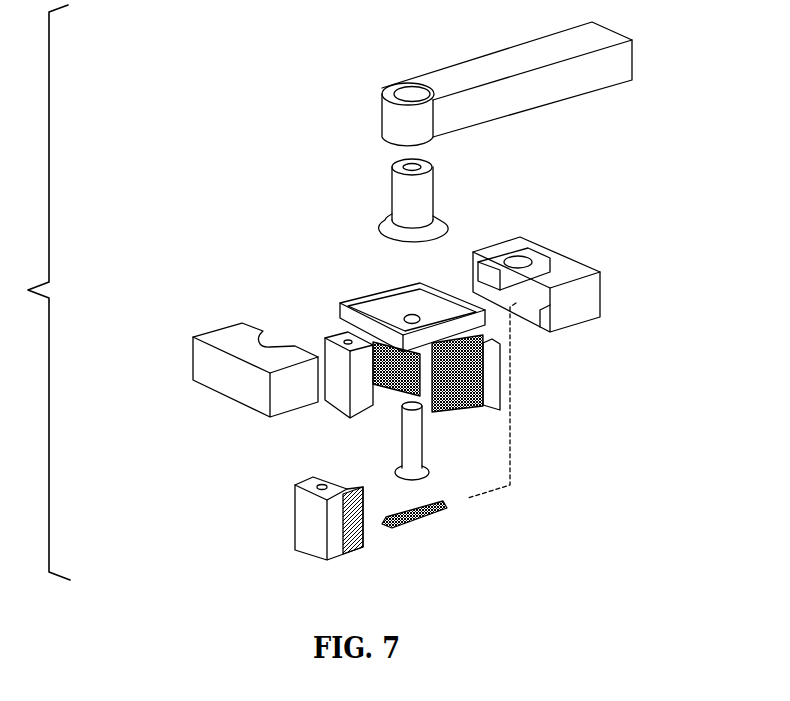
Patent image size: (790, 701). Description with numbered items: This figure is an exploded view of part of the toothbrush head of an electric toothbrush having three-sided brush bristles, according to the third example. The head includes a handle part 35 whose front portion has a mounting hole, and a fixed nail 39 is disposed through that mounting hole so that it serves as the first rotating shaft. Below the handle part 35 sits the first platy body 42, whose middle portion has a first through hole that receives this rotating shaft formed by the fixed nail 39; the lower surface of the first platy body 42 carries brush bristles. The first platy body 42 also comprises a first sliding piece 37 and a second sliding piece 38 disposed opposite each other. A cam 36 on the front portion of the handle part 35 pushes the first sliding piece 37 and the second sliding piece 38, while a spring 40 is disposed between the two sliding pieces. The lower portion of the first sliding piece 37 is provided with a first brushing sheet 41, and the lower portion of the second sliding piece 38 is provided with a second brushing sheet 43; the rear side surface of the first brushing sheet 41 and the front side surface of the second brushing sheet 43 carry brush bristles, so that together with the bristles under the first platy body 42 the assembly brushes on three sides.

The handle part 35 is at (590, 68).
The cam 36 is at (382, 208).
The first sliding piece 37 is at (232, 340).
The second sliding piece 38 is at (583, 297).
The fixed nail 39 is at (413, 444).
The spring 40 is at (420, 522).
The first brushing sheet 41 is at (307, 530).
The first platy body 42 is at (487, 340).
The second brushing sheet 43 is at (490, 382).